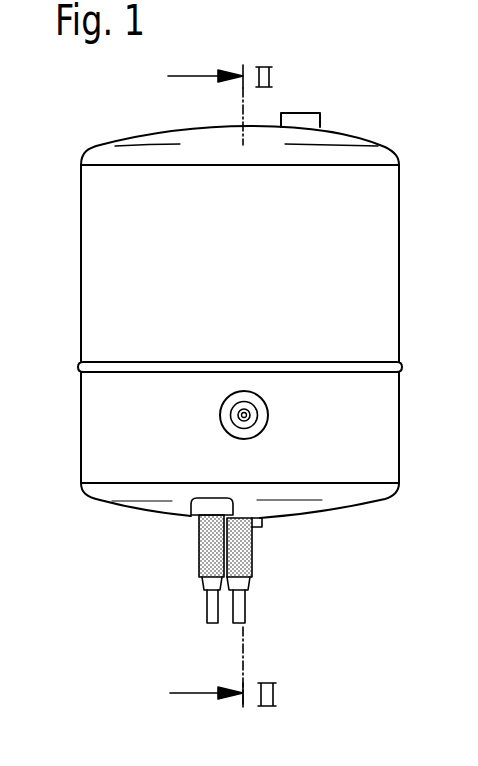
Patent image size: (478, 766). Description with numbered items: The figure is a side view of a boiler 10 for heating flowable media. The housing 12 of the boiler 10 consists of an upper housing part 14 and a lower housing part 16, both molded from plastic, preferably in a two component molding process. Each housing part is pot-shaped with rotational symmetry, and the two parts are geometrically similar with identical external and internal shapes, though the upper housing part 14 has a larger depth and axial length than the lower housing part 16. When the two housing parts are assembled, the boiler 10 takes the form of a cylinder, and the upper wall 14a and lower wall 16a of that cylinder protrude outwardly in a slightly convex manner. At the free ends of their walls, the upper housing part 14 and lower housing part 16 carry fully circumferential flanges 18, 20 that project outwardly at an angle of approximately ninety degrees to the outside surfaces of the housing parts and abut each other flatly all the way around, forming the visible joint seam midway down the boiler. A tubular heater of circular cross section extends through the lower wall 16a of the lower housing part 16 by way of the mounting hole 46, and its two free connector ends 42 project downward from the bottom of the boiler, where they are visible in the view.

The boiler 10 is at (402, 130).
The housing 12 is at (81, 237).
The upper housing part 14 is at (252, 258).
The upper wall 14a is at (337, 129).
The lower housing part 16 is at (333, 426).
The lower wall 16a is at (157, 517).
The flange 18 is at (80, 363).
The flange 20 is at (79, 375).
The connector ends 42 is at (201, 586).
The mounting hole 46 is at (198, 526).